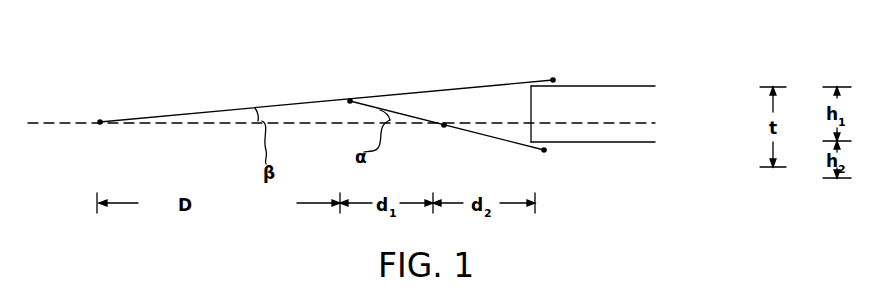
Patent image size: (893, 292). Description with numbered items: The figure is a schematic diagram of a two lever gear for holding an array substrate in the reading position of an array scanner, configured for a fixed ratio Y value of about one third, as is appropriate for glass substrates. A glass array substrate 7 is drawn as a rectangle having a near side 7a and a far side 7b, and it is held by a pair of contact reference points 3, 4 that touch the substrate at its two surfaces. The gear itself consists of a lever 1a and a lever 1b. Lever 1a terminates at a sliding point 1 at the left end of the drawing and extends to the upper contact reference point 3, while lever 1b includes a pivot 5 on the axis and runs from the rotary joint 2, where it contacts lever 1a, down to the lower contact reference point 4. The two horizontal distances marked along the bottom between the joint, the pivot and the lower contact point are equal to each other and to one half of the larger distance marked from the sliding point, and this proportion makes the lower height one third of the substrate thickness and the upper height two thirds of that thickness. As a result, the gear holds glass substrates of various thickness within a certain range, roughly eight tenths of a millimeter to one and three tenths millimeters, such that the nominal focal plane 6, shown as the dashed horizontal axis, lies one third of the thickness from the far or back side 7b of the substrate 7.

The sliding point 1 is at (100, 122).
The lever 1a is at (232, 109).
The lever 1b is at (420, 116).
The rotary joint 2 is at (350, 101).
The contact reference point 3 is at (553, 80).
The contact reference point 4 is at (544, 150).
The pivot 5 is at (444, 126).
The nominal focal plane 6 is at (662, 124).
The glass array substrate 7 is at (595, 126).
The near side 7a is at (605, 85).
The far side 7b is at (611, 144).